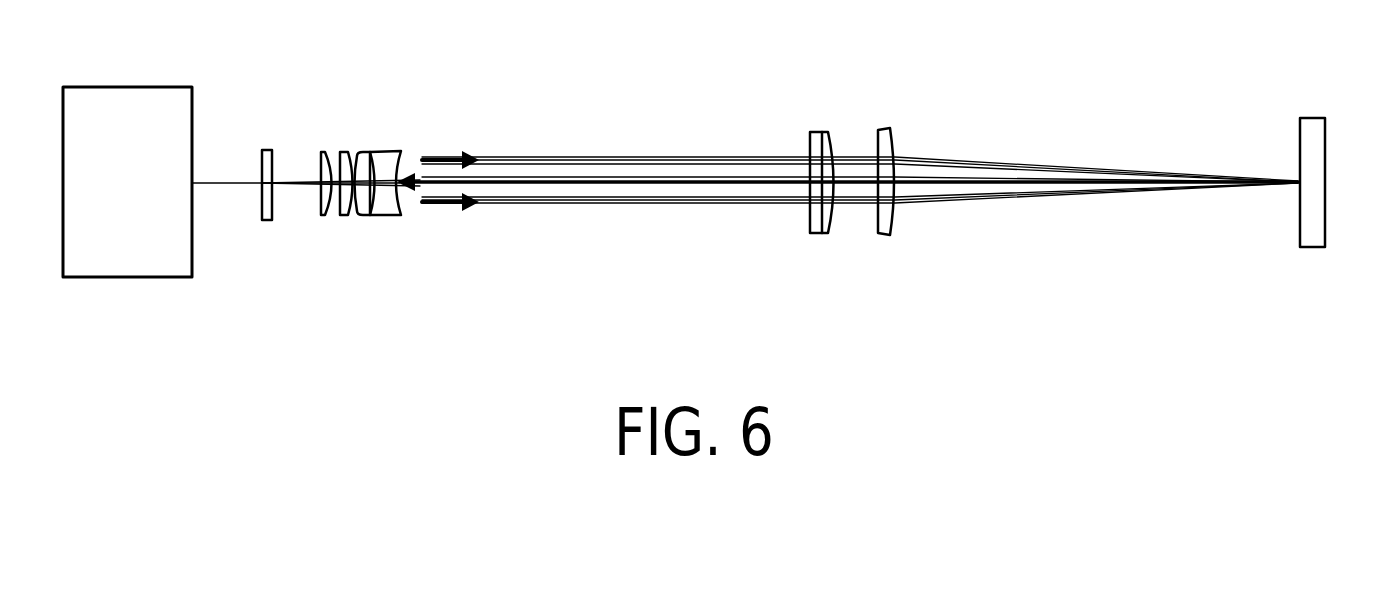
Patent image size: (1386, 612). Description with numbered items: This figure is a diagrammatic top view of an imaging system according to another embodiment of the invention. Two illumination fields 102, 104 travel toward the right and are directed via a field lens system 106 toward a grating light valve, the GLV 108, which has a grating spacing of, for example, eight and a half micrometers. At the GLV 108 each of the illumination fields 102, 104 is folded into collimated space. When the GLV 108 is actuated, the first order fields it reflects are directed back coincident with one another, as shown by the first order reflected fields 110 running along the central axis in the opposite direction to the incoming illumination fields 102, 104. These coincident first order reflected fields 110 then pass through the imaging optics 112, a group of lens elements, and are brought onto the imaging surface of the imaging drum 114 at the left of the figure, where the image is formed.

The illumination field 102 is at (455, 137).
The illumination field 104 is at (454, 216).
The field lens system 106 is at (802, 112).
The GLV 108 is at (1326, 128).
The first order reflected fields 110 is at (528, 175).
The imaging optics 112 is at (258, 138).
The imaging drum 114 is at (92, 195).